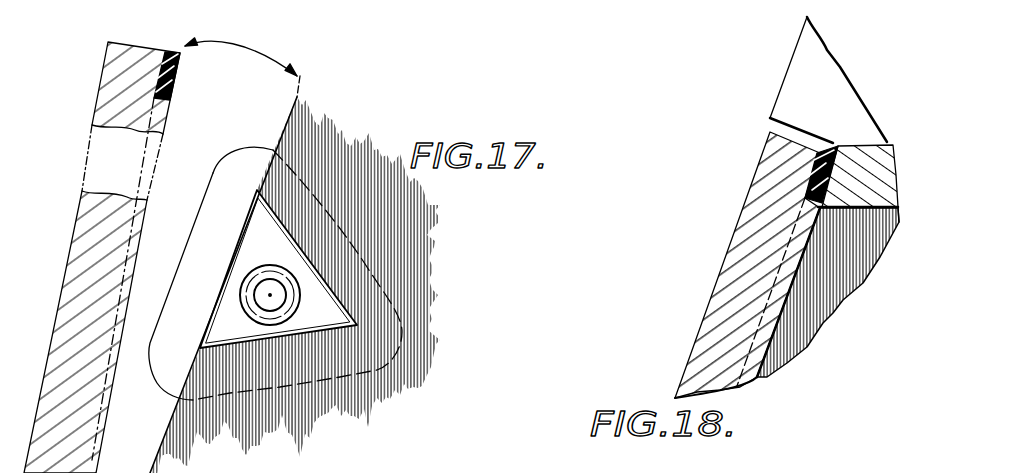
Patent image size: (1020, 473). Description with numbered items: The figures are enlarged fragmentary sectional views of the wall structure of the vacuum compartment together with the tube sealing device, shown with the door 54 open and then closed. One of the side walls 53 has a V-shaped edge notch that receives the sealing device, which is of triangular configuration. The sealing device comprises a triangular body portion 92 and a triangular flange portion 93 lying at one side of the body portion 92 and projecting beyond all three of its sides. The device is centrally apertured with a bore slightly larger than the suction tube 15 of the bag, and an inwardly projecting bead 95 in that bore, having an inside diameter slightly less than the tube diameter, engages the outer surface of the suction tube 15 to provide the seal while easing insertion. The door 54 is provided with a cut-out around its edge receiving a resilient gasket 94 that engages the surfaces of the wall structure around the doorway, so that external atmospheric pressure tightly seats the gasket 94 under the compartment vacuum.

In FIG. 17, the suction tube 15 is at (283, 297).
In FIG. 18, the side wall 53 is at (817, 307).
In FIG. 17, the door 54 is at (73, 265).
In FIG. 18, the door 54 is at (767, 255).
In FIG. 17, the triangular body portion 92 is at (273, 243).
In FIG. 17, the triangular flange portion 93 is at (252, 160).
In FIG. 17, the resilient gasket 94 is at (174, 82).
In FIG. 18, the resilient gasket 94 is at (836, 143).
In FIG. 17, the bead 95 is at (291, 305).